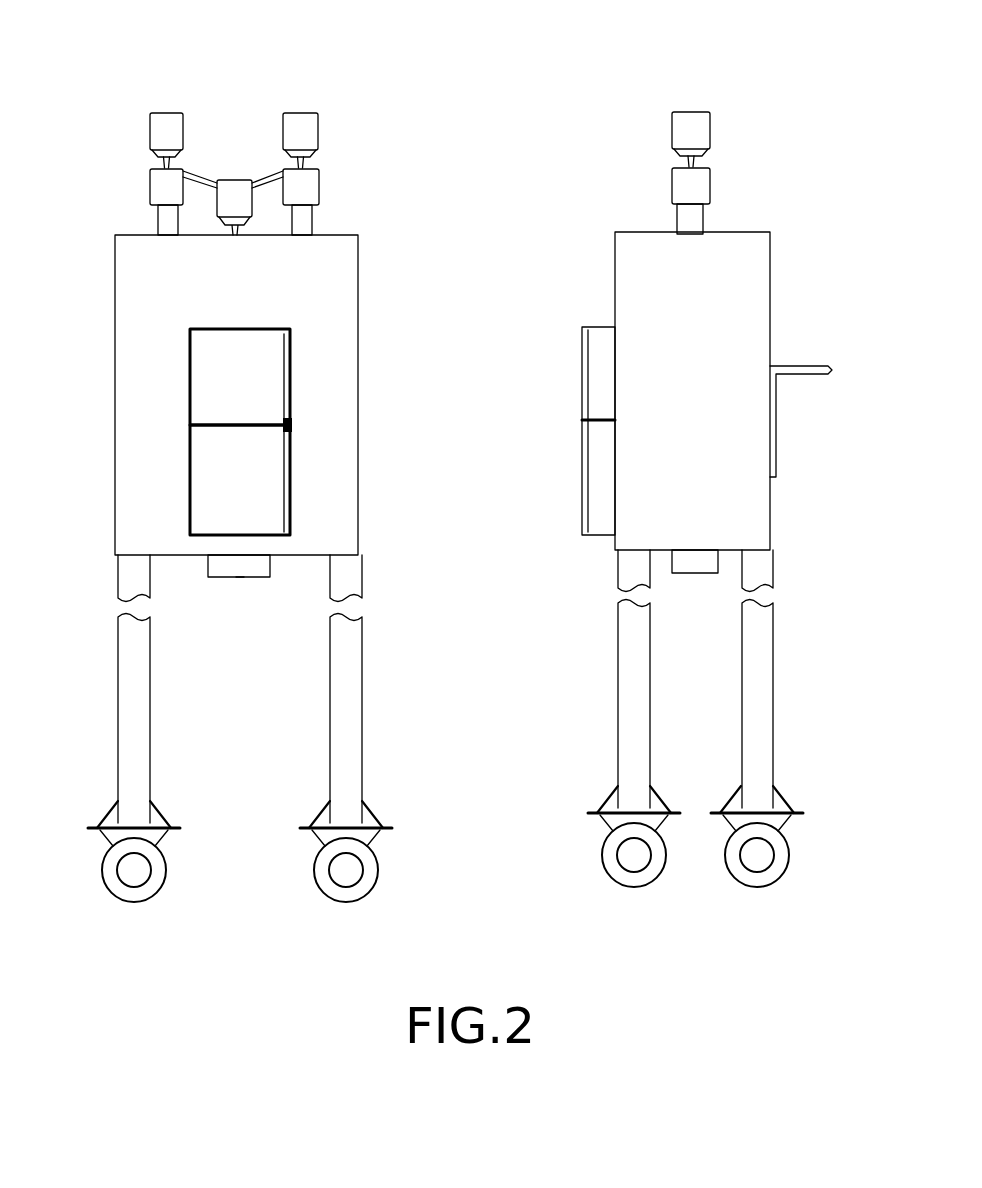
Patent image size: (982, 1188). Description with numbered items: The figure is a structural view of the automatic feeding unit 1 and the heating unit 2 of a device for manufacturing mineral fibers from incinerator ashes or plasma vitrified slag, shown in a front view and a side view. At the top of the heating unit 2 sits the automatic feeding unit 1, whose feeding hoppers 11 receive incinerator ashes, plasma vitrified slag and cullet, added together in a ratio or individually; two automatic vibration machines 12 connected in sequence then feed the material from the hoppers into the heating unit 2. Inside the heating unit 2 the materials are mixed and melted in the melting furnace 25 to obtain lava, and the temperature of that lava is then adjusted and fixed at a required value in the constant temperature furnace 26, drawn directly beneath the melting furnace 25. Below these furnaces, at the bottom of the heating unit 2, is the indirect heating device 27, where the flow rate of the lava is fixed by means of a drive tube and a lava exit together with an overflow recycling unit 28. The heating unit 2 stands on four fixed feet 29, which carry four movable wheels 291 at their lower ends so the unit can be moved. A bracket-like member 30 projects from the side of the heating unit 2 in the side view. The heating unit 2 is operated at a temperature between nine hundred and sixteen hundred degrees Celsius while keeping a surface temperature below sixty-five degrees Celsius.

The automatic feeding unit 1 is at (248, 84).
The heating unit 2 is at (384, 283).
The feeding hoppers 11 is at (318, 122).
The automatic vibration machines 12 is at (320, 182).
The melting furnace 25 is at (265, 389).
The constant temperature furnace 26 is at (265, 483).
The indirect heating device 27 is at (309, 558).
The overflow recycling unit 28 is at (240, 578).
The fixed feet 29 is at (362, 712).
The movable wheels 291 is at (378, 865).
The hook 30 is at (810, 366).